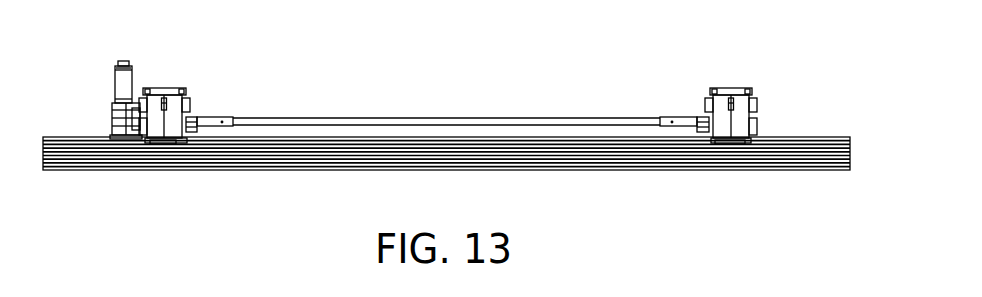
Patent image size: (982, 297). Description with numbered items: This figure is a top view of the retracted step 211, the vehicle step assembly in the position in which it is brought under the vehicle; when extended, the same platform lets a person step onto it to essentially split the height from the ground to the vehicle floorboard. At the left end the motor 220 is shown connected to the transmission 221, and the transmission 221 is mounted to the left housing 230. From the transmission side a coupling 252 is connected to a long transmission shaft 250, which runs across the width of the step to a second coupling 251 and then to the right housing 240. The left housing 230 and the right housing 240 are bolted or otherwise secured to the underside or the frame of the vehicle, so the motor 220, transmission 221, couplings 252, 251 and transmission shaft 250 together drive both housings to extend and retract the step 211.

The retracted step 211 is at (338, 157).
The motor 220 is at (114, 79).
The transmission 221 is at (112, 110).
The left housing 230 is at (172, 90).
The right housing 240 is at (737, 89).
The transmission shaft 250 is at (470, 118).
The coupling 251 is at (673, 118).
The coupling 252 is at (226, 117).